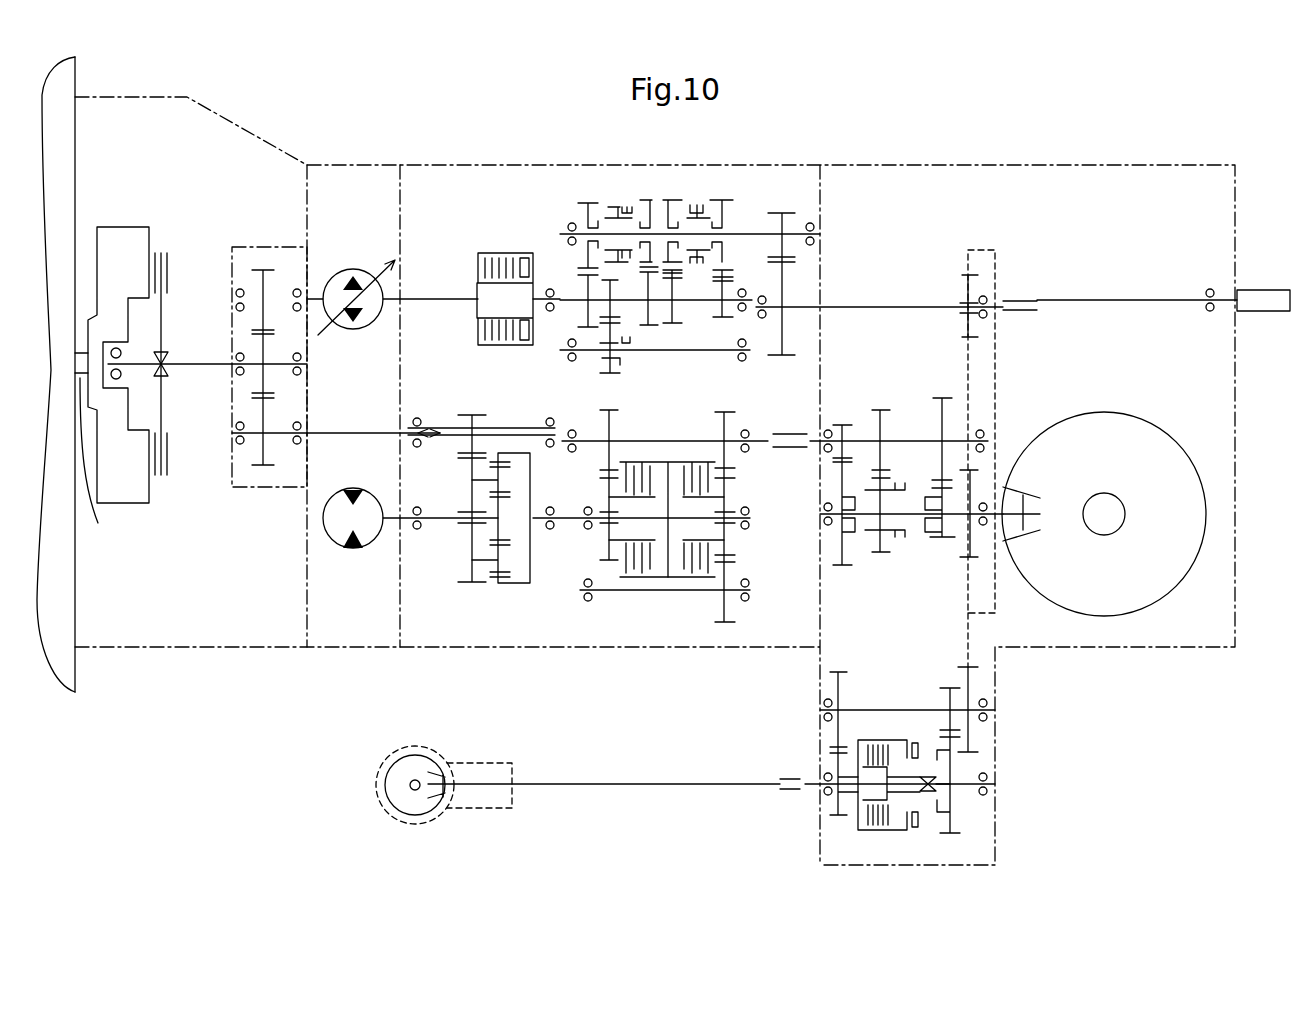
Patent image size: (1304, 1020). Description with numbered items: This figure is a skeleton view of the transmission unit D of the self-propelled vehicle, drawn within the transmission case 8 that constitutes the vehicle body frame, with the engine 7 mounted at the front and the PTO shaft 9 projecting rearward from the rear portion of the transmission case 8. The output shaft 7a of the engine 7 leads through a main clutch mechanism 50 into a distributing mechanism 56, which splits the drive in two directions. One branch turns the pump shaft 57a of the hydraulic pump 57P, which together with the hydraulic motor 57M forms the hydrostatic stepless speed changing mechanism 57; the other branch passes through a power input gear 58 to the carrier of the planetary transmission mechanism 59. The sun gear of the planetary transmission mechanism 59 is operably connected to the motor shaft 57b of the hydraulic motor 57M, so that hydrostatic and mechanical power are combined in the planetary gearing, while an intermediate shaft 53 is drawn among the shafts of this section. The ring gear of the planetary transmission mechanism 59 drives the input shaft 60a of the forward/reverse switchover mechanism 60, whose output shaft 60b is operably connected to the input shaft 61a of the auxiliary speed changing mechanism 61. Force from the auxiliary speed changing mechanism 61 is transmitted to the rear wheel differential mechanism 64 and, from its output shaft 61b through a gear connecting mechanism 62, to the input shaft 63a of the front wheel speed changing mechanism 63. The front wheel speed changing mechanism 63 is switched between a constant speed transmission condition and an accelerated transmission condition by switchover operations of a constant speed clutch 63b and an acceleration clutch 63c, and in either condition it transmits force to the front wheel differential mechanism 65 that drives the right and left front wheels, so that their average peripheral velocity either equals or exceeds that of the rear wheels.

The engine 7 is at (82, 72).
The output shaft of the engine 7a is at (97, 467).
The transmission case 8 is at (553, 163).
The PTO shaft 9 is at (1257, 297).
The main clutch mechanism 50 is at (127, 209).
The intermediate shaft 53 is at (608, 548).
The distributing mechanism 56 is at (243, 243).
The hydrostatic speed changing mechanism 57 is at (326, 219).
The pump shaft 57a is at (278, 300).
The hydraulic pump 57P is at (363, 273).
The hydraulic motor 57M is at (352, 550).
The motor shaft 57b is at (438, 518).
The power input gear 58 is at (467, 410).
The planetary transmission mechanism 59 is at (484, 604).
The forward/reverse switchover mechanism 60 is at (660, 618).
The input shaft of the forward/reverse switchover mechanism 60a is at (707, 518).
The output shaft of the forward/reverse switchover mechanism 60b is at (678, 440).
The auxiliary speed changing mechanism 61 is at (957, 403).
The input shaft of the auxiliary speed changing mechanism 61a is at (905, 440).
The output shaft of the auxiliary speed changing mechanism 61b is at (957, 513).
The gear connecting mechanism 62 is at (995, 272).
The front wheel speed changing mechanism 63 is at (978, 807).
The input shaft of the front wheel speed changing mechanism 63a is at (897, 710).
The constant speed clutch 63b is at (930, 813).
The acceleration clutch 63c is at (888, 830).
The rear wheel differential mechanism 64 is at (1145, 415).
The front wheel differential mechanism 65 is at (377, 787).
The transmission unit D is at (1018, 667).